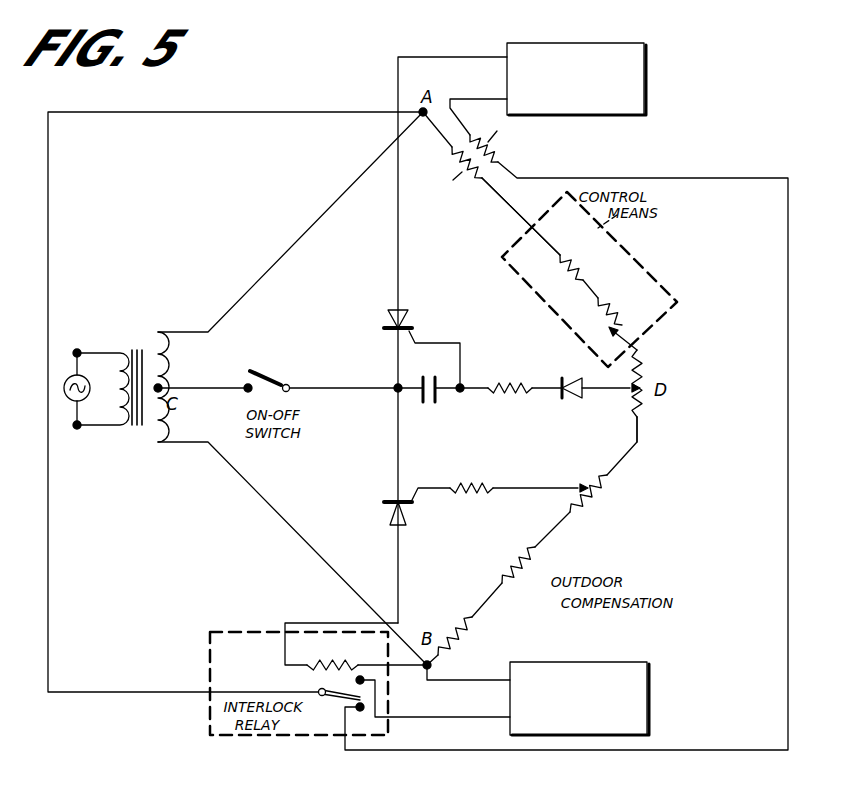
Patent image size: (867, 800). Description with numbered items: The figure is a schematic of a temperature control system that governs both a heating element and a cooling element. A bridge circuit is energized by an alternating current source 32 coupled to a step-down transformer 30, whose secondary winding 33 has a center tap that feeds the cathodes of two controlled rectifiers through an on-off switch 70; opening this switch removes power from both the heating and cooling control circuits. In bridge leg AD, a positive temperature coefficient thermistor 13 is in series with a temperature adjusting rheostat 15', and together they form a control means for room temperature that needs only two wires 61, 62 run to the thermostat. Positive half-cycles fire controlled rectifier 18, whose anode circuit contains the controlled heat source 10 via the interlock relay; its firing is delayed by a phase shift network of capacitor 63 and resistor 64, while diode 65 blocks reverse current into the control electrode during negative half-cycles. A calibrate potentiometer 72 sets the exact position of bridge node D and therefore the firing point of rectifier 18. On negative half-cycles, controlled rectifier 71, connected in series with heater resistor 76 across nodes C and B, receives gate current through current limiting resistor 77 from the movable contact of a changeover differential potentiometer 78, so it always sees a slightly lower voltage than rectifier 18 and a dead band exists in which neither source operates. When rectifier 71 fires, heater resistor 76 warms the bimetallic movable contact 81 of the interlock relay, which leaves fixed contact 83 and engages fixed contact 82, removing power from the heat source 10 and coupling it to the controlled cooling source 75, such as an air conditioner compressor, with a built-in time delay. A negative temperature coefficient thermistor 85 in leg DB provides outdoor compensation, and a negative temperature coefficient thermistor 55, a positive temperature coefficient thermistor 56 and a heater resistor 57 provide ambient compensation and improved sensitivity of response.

The controlled heat source 10 is at (644, 57).
The controlled cooling source 75 is at (647, 680).
The positive temperature coefficient thermistor 56 is at (478, 180).
The heater resistor 57 is at (500, 164).
The wire 61 is at (513, 217).
The positive temperature coefficient thermistor 13 is at (562, 257).
The temperature adjusting rheostat 15' is at (672, 333).
The wire 62 is at (640, 350).
The calibrate potentiometer 72 is at (640, 413).
The resistor 64 is at (515, 378).
The capacitor 63 is at (430, 402).
The diode 65 is at (575, 398).
The controlled rectifier 18 is at (390, 312).
The controlled rectifier 71 is at (384, 505).
The current limiting resistor 77 is at (466, 484).
The changeover differential potentiometer 78 is at (590, 494).
The negative temperature coefficient thermistor 85 is at (530, 567).
The negative temperature coefficient thermistor 55 is at (463, 625).
The transformer 30 is at (138, 342).
The secondary winding 33 is at (157, 371).
The alternating current source 32 is at (74, 428).
The on-off switch 70 is at (262, 372).
The heater resistor 76 is at (305, 668).
The fixed contact 82 is at (362, 680).
The bimetallic movable contact 81 is at (338, 702).
The fixed contact 83 is at (362, 710).